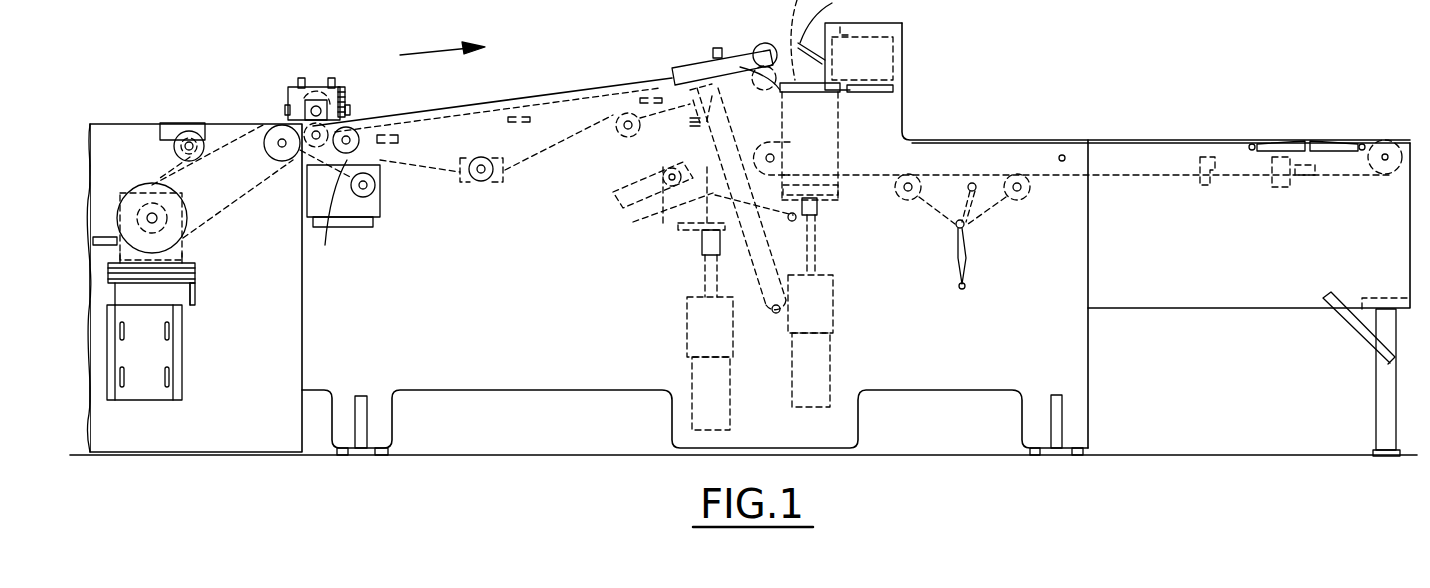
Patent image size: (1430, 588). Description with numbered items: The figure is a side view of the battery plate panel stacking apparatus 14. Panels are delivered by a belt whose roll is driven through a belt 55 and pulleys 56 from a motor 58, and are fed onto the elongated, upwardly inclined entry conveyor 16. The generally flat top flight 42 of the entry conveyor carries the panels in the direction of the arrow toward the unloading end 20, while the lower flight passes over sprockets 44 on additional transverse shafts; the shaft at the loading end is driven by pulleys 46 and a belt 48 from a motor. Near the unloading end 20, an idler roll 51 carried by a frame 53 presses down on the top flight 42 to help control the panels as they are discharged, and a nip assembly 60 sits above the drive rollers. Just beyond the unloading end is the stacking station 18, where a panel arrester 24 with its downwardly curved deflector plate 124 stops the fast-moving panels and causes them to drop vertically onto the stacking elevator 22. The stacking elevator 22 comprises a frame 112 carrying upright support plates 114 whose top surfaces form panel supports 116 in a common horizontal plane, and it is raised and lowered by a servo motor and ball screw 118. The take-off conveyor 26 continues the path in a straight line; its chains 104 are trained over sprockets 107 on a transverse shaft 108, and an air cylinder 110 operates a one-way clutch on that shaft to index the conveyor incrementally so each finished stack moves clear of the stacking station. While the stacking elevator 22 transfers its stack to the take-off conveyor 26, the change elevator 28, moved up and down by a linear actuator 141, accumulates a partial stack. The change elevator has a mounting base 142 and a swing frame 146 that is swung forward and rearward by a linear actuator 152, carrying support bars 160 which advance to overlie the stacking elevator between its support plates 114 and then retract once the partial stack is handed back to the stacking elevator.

The apparatus 14 is at (1182, 110).
The entry conveyor 16 is at (587, 84).
The stacking station 18 is at (870, 125).
The unloading end 20 is at (738, 198).
The stacking elevator 22 is at (840, 307).
The panel arrester 24 is at (903, 36).
The take-off conveyor 26 is at (1098, 138).
The change elevator 28 is at (687, 315).
The top flight 42 is at (497, 103).
The sprockets 44 is at (465, 182).
The pulleys 46 is at (352, 127).
The belt 48 is at (329, 221).
The idler roll 51 is at (772, 43).
The frame 53 is at (737, 50).
The belt 55 is at (237, 200).
The pulleys 56 is at (272, 130).
The motor 58 is at (180, 290).
The nip assembly 60 is at (317, 73).
The chains 104 is at (903, 132).
The sprockets 107 is at (1392, 138).
The transverse shaft 108 is at (780, 158).
The air cylinder 110 is at (1250, 180).
The frame 112 is at (822, 203).
The support plates 114 is at (837, 116).
The panel supports 116 is at (808, 40).
The servo motor and ball screw 118 is at (827, 363).
The deflector plate 124 is at (840, 32).
The linear actuator 141 is at (692, 377).
The mounting base 142 is at (667, 227).
The swing frame 146 is at (657, 210).
The linear actuator 152 is at (633, 177).
The support bars 160 is at (692, 135).